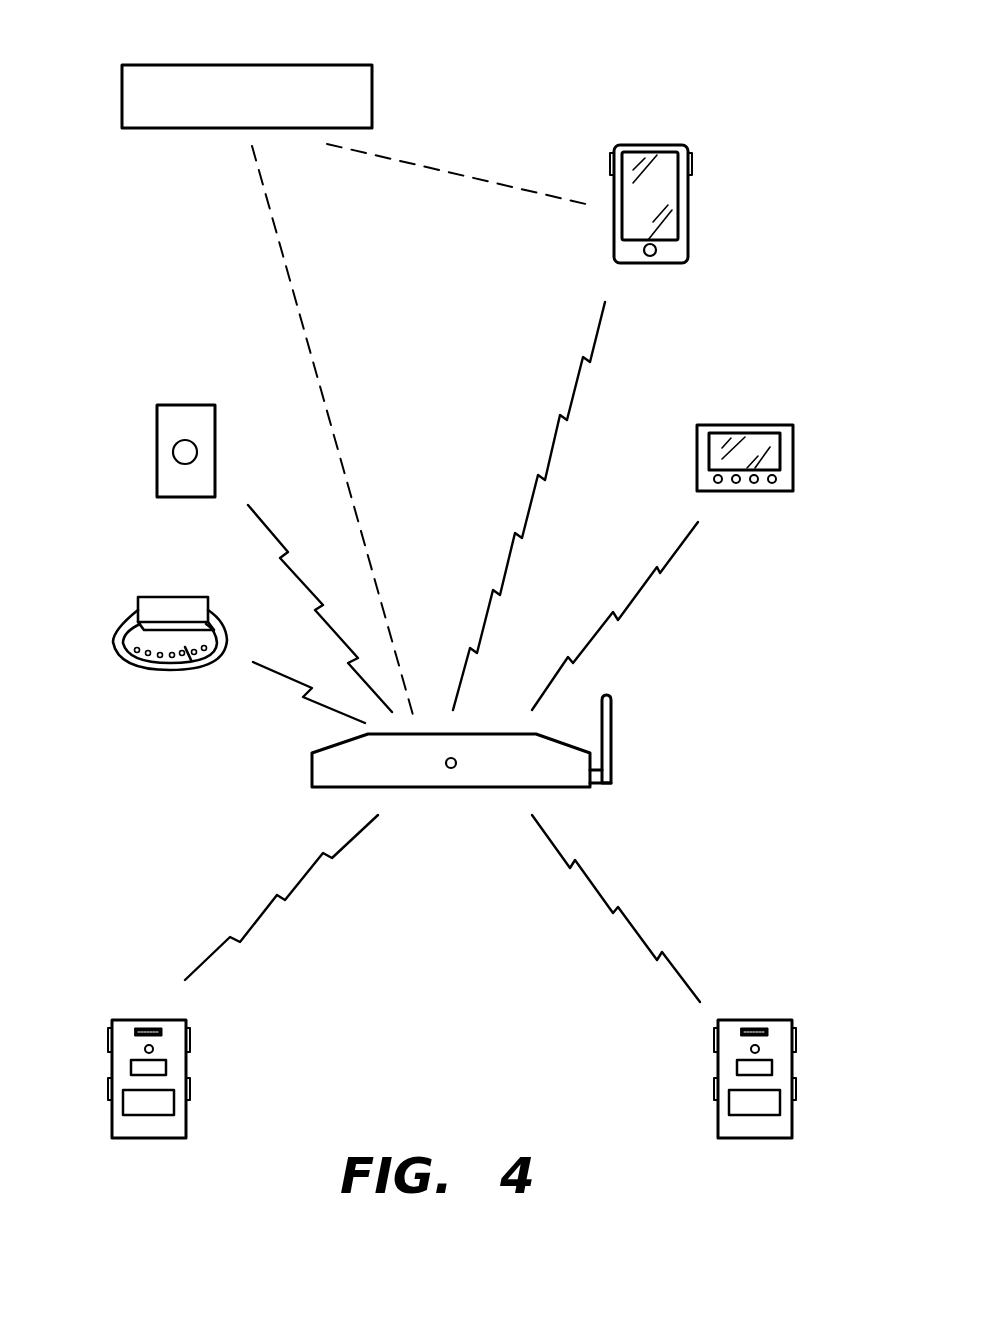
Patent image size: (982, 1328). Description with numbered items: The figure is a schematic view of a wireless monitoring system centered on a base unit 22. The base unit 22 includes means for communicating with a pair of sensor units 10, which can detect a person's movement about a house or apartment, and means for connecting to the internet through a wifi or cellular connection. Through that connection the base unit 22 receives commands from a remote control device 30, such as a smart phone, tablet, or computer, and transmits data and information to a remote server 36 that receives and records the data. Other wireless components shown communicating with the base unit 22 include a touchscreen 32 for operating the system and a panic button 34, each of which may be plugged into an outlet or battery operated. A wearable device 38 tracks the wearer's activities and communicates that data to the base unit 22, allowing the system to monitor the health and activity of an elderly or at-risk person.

The sensor unit 10 is at (187, 1065).
The base unit 22 is at (568, 789).
The remote control device 30 is at (690, 207).
The touchscreen 32 is at (755, 424).
The panic button 34 is at (157, 435).
The remote server 36 is at (280, 63).
The wearable device 38 is at (116, 613).